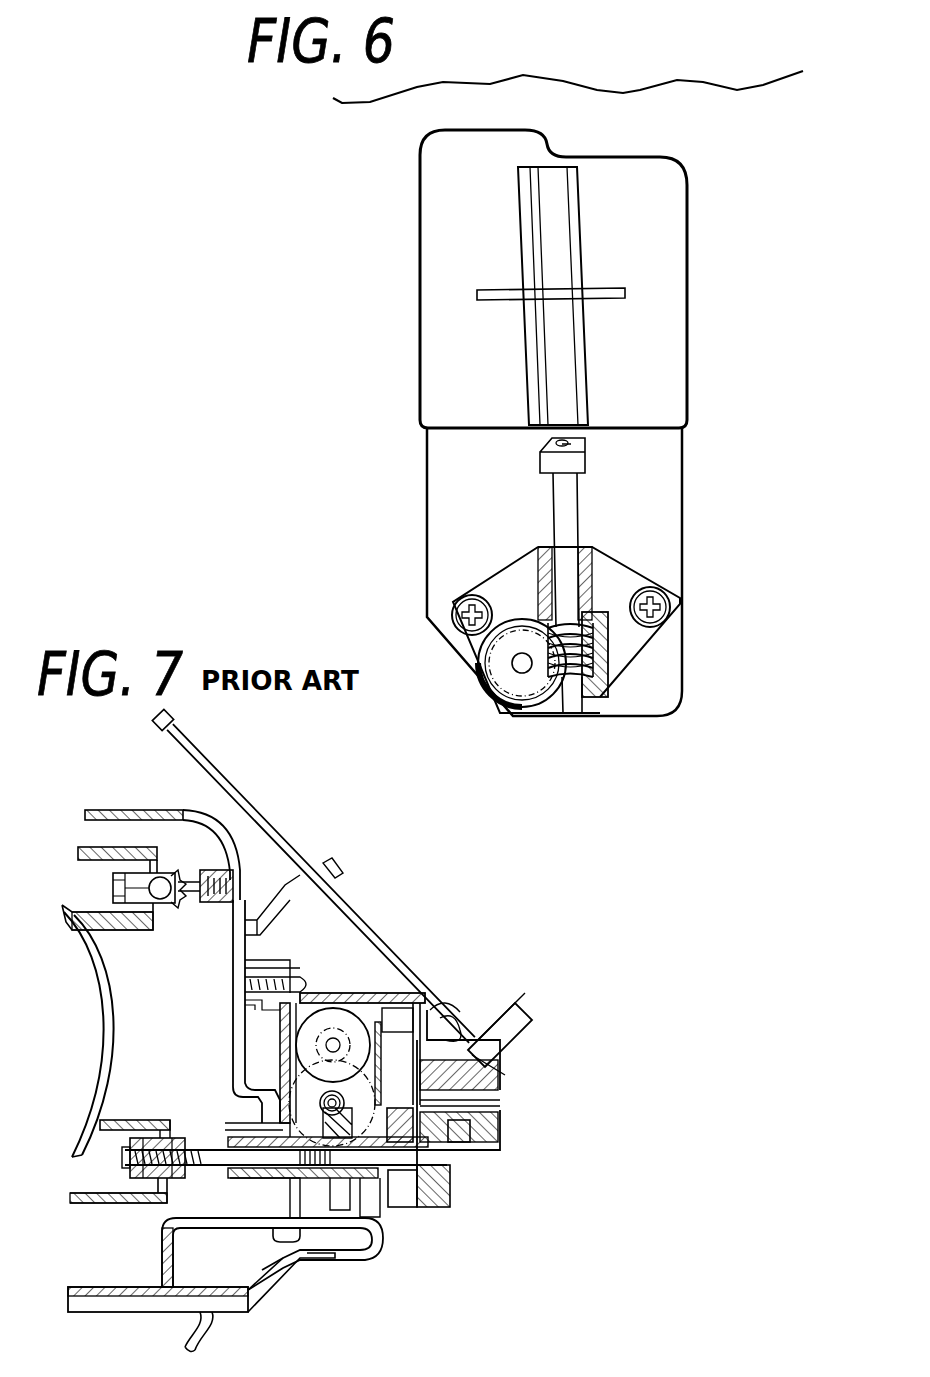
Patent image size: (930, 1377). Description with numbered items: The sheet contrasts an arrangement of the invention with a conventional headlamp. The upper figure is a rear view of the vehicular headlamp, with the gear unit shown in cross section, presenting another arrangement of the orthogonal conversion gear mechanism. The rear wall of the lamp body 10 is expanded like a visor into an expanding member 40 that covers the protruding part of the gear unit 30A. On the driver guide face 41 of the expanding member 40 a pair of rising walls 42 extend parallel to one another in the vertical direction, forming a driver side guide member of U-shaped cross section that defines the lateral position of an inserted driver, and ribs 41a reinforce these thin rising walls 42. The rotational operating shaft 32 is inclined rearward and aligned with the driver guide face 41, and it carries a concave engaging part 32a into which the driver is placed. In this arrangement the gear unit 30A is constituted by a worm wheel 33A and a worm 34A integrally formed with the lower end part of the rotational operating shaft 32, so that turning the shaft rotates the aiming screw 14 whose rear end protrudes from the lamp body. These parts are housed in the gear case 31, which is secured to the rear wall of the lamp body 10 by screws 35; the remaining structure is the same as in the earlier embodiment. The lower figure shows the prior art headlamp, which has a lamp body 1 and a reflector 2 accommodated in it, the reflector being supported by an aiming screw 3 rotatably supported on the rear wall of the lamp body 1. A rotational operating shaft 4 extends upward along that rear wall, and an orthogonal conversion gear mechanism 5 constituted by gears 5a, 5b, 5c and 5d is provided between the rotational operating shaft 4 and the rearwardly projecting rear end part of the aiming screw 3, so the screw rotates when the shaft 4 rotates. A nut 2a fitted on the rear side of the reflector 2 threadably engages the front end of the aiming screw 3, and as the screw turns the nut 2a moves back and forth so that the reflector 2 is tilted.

In FIG. 6, the lamp body 10 is at (641, 106).
In FIG. 6, the expanding member 40 is at (583, 423).
In FIG. 6, the driver guide face 41 is at (660, 373).
In FIG. 6, the ribs 41a is at (476, 292).
In FIG. 6, the rising walls 42 is at (515, 199).
In FIG. 6, the concave engaging part 32a is at (557, 440).
In FIG. 6, the rotational operating shaft 32 is at (565, 523).
In FIG. 6, the gear unit 30A is at (599, 696).
In FIG. 6, the screws 35 is at (453, 613).
In FIG. 6, the gear case 31 is at (483, 683).
In FIG. 6, the aiming screw 14 is at (522, 673).
In FIG. 6, the worm wheel 33A is at (547, 684).
In FIG. 6, the worm 34A is at (608, 650).
In FIG. 7, the lamp body 1 is at (230, 847).
In FIG. 7, the rotational operating shaft 4 is at (417, 977).
In FIG. 7, the reflector 2 is at (90, 1100).
In FIG. 7, the nut 2a is at (140, 1173).
In FIG. 7, the aiming screw 3 is at (207, 1150).
In FIG. 7, the orthogonal conversion gear mechanism 5 is at (497, 1150).
In FIG. 7, the gear 5a is at (443, 1203).
In FIG. 7, the gear 5b is at (454, 1132).
In FIG. 7, the gear 5c is at (500, 1103).
In FIG. 7, the gear 5d is at (512, 1020).